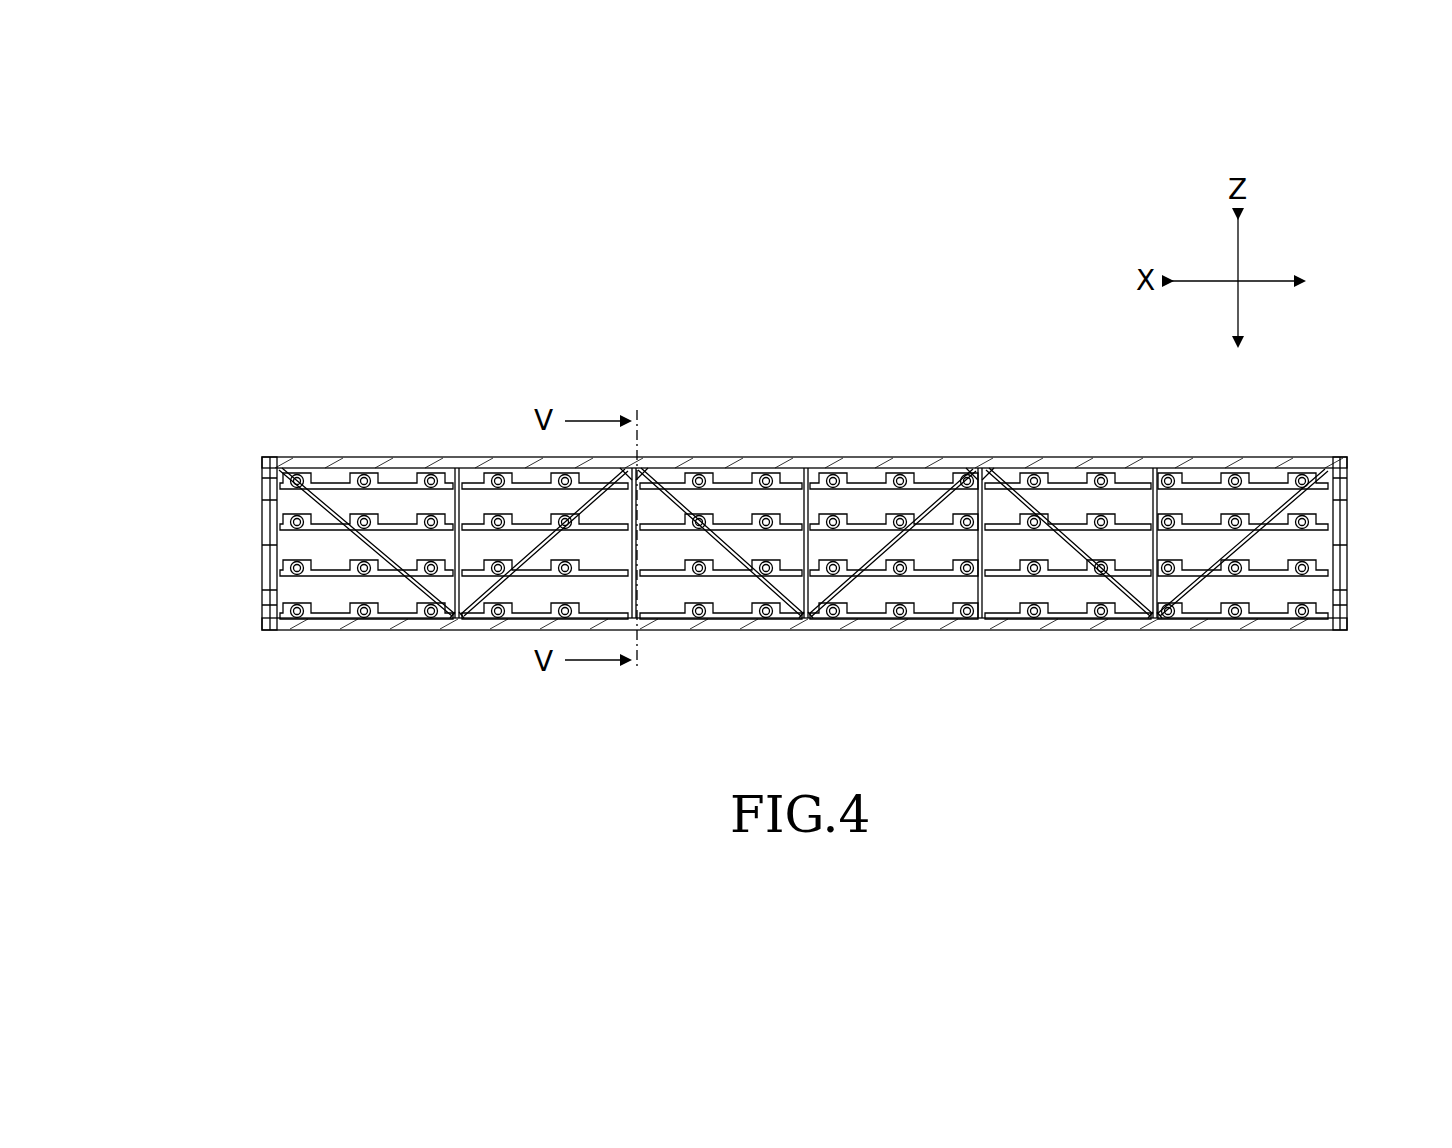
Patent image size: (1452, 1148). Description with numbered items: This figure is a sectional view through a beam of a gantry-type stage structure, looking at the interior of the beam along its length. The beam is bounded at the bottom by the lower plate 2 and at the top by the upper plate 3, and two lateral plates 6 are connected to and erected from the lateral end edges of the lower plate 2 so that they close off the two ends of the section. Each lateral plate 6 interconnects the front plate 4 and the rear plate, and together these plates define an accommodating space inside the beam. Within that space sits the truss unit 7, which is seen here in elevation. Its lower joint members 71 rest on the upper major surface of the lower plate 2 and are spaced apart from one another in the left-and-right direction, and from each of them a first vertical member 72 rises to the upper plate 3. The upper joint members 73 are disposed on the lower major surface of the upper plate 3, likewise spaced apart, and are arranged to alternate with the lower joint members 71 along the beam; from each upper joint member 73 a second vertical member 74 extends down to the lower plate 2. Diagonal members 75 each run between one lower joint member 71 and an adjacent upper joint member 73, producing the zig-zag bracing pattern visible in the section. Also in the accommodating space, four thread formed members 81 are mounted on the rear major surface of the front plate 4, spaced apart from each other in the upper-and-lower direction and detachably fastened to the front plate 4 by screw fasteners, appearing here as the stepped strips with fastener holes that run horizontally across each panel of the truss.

The lower plate 2 is at (1160, 634).
The upper plate 3 is at (1087, 452).
The front plate 4 is at (880, 468).
The lateral plates 6 is at (260, 507).
The truss unit 7 is at (401, 580).
The lower joint members 71 is at (462, 624).
The first vertical members 72 is at (461, 505).
The upper joint members 73 is at (639, 466).
The second vertical members 74 is at (646, 494).
The diagonal members 75 is at (740, 562).
The thread formed members 81 is at (401, 470).